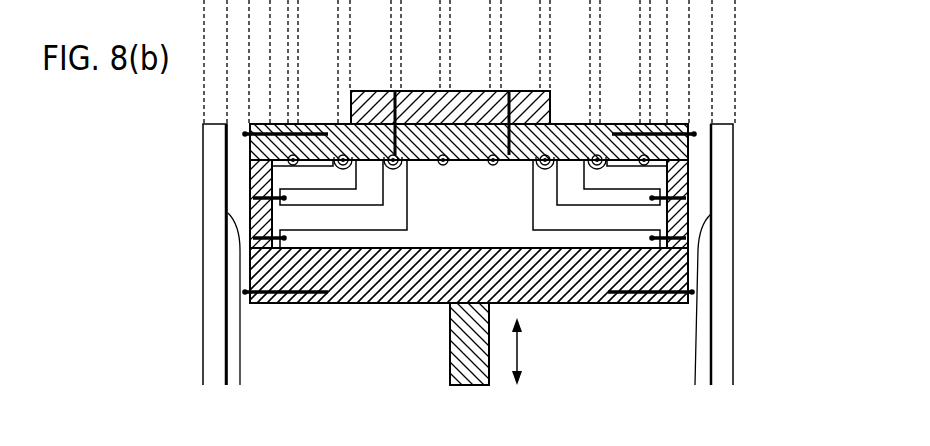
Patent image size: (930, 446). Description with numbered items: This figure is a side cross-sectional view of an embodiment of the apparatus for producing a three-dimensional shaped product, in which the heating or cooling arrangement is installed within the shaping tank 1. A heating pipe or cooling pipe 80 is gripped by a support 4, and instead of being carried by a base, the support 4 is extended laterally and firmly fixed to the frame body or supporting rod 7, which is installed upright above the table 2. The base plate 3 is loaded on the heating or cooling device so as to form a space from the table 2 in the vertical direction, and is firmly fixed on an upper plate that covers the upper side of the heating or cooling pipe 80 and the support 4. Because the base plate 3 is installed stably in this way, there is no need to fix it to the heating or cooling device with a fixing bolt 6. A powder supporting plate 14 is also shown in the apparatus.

The shaping tank 1 is at (205, 278).
The table 2 is at (326, 276).
The base plate 3 is at (536, 91).
The support 4 is at (543, 218).
The fixing bolt 6 is at (259, 125).
The frame body or supporting rod 7 is at (247, 163).
The powder supporting plate 14 is at (469, 314).
The heating pipe or cooling pipe 80 is at (298, 133).